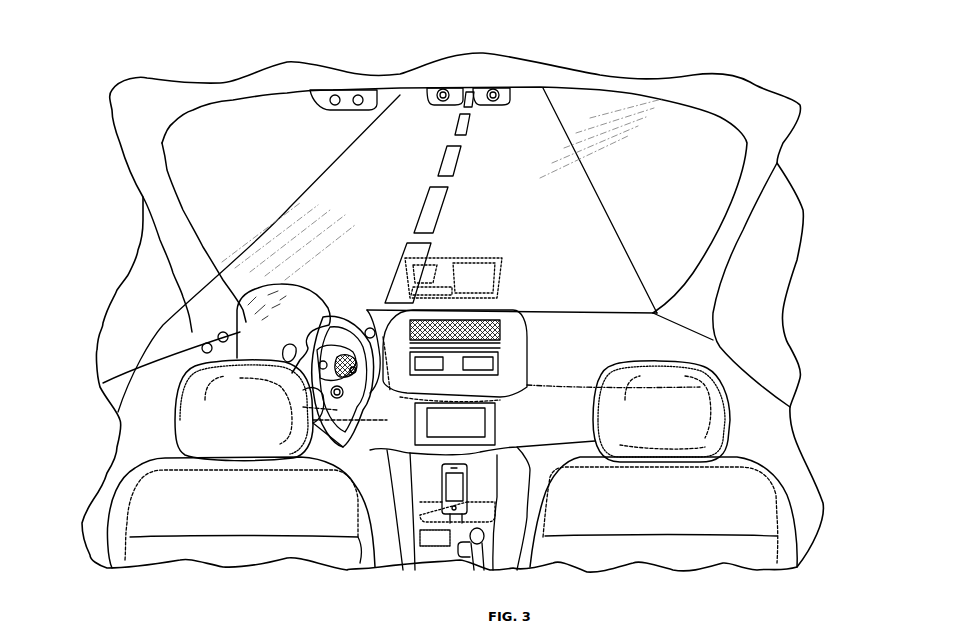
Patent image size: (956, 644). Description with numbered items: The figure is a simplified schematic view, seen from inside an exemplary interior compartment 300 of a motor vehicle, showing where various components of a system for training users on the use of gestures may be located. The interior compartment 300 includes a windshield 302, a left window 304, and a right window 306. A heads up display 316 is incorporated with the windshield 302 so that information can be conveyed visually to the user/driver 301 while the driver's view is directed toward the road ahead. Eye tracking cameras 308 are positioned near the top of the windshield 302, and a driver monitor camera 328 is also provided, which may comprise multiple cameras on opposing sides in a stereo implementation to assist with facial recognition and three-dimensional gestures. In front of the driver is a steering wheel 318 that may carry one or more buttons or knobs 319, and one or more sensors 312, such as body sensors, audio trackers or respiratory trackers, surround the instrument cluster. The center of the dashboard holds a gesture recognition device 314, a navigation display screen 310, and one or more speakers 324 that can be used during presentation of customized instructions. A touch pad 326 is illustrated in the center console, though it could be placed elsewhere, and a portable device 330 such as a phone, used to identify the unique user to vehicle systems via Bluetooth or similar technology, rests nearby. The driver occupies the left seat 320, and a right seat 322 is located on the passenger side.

The interior compartment 300 is at (765, 74).
The user/driver 301 is at (288, 287).
The windshield 302 is at (695, 130).
The left window 304 is at (152, 275).
The right window 306 is at (770, 247).
The eye tracking cameras 308 is at (335, 90).
The navigation display screen 310 is at (487, 435).
The sensors 312 is at (220, 327).
The gesture recognition device 314 is at (413, 361).
The heads up display 316 is at (467, 258).
The steering wheel 318 is at (352, 316).
The buttons or knobs 319 is at (355, 407).
The left seat 320 is at (117, 518).
The right seat 322 is at (783, 510).
The speakers 324 is at (500, 320).
The touch pad 326 is at (423, 533).
The driver monitor camera 328 is at (483, 88).
The portable device 330 is at (467, 477).